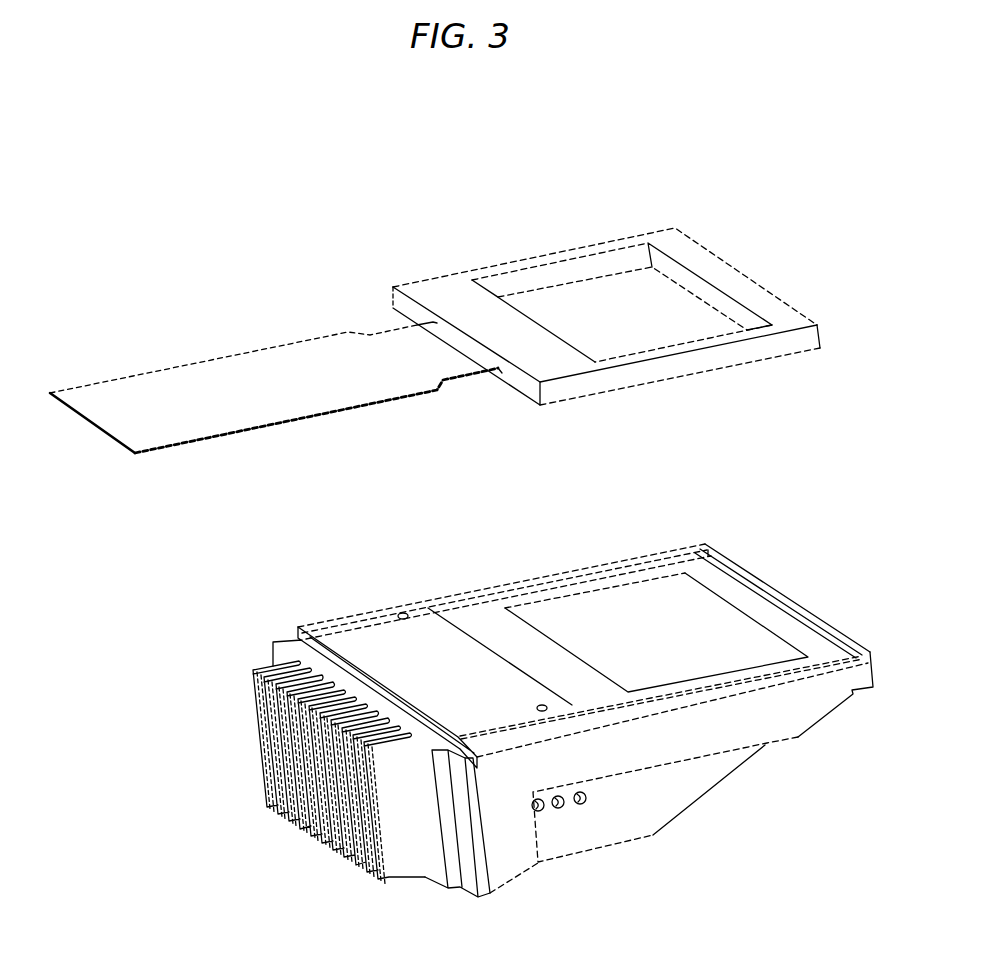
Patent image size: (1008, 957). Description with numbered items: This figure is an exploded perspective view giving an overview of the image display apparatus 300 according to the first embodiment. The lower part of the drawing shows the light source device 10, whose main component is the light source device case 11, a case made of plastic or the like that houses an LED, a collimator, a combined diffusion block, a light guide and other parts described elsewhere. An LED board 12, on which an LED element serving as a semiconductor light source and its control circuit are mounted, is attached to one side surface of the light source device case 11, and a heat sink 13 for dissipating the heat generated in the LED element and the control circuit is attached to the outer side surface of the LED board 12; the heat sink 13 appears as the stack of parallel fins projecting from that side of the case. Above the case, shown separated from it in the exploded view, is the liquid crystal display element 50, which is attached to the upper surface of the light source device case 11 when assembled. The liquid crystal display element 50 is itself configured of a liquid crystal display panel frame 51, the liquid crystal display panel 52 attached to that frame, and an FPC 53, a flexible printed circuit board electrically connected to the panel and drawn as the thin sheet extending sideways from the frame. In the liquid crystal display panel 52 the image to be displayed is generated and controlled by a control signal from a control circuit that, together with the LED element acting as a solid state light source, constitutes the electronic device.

The image display apparatus 300 is at (318, 159).
The liquid crystal display element 50 is at (306, 250).
The liquid crystal display panel frame 51 is at (523, 260).
The liquid crystal display panel 52 is at (652, 305).
The FPC 53 is at (228, 370).
The housing 10 is at (383, 556).
The light source device case 11 is at (715, 778).
The LED board 12 is at (480, 882).
The heat sink 13 is at (327, 840).